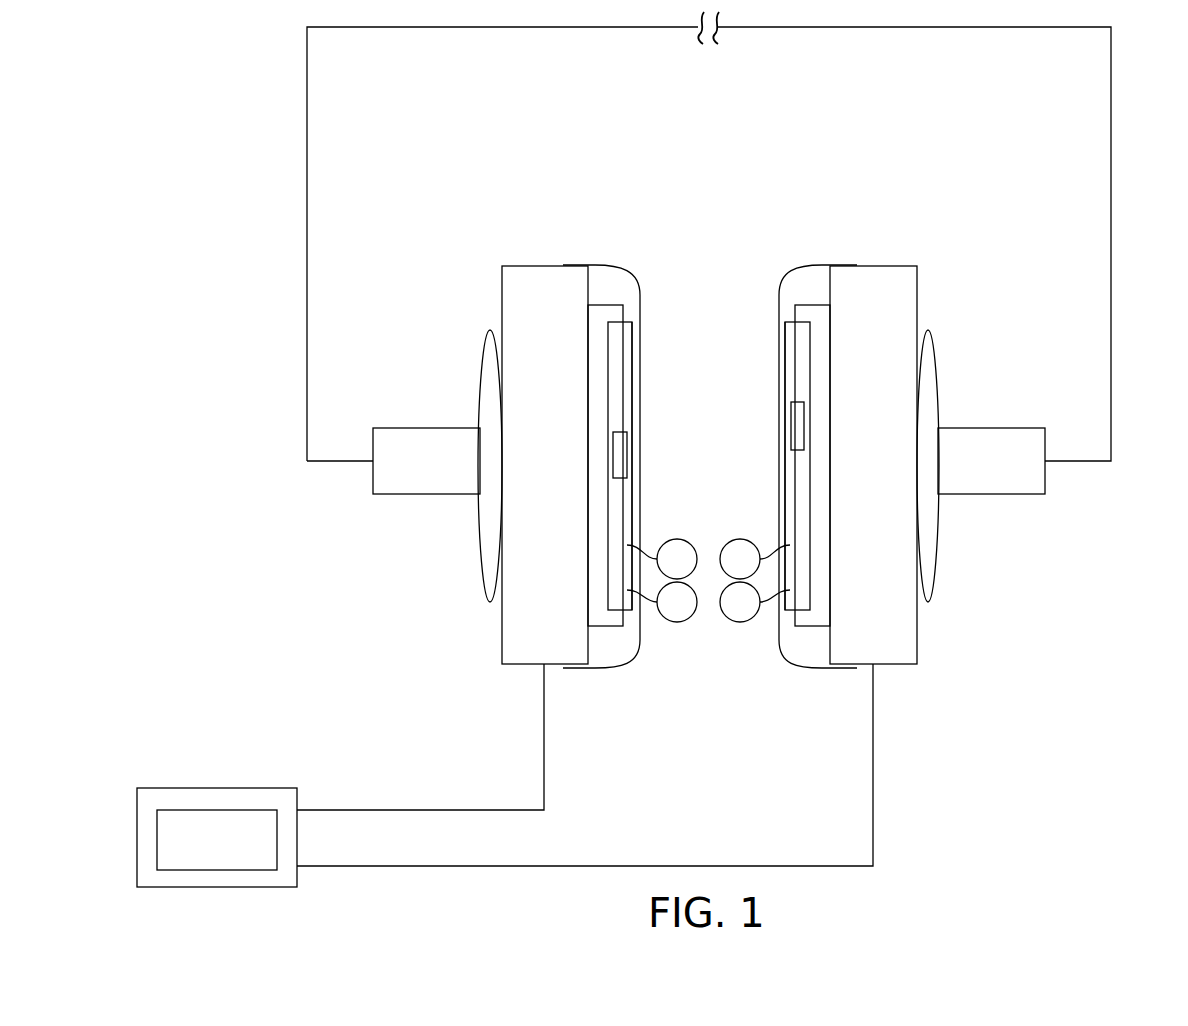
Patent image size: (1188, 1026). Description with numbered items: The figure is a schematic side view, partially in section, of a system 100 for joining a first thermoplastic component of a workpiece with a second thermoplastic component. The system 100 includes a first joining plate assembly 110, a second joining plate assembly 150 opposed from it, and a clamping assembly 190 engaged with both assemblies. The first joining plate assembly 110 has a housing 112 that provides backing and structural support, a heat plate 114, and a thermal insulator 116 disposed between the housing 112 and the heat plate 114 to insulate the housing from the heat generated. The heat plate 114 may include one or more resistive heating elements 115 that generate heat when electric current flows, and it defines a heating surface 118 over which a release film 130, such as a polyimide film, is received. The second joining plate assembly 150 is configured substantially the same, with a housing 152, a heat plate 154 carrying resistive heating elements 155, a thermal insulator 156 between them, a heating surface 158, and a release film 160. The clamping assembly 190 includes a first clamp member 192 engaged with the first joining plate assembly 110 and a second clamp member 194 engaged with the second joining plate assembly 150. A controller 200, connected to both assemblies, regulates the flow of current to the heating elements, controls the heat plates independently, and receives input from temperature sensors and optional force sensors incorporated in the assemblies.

The system for joining thermoplastic components 100 is at (812, 128).
The first joining plate assembly 110 is at (576, 409).
The housing 112 is at (549, 266).
The heat plate 114 is at (622, 349).
The resistive heating elements 115 is at (627, 455).
The thermal insulator 116 is at (602, 305).
The heating surface 118 is at (636, 398).
The release film 130 is at (625, 266).
The second joining plate assembly 150 is at (850, 410).
The housing 152 is at (917, 285).
The heat plate 154 is at (795, 345).
The resistive heating elements 155 is at (790, 424).
The thermal insulator 156 is at (814, 305).
The heating surface 158 is at (783, 525).
The release film 160 is at (792, 267).
The clamping assembly 190 is at (1112, 102).
The first clamp member 192 is at (448, 494).
The second clamp member 194 is at (967, 494).
The controller 200 is at (215, 788).